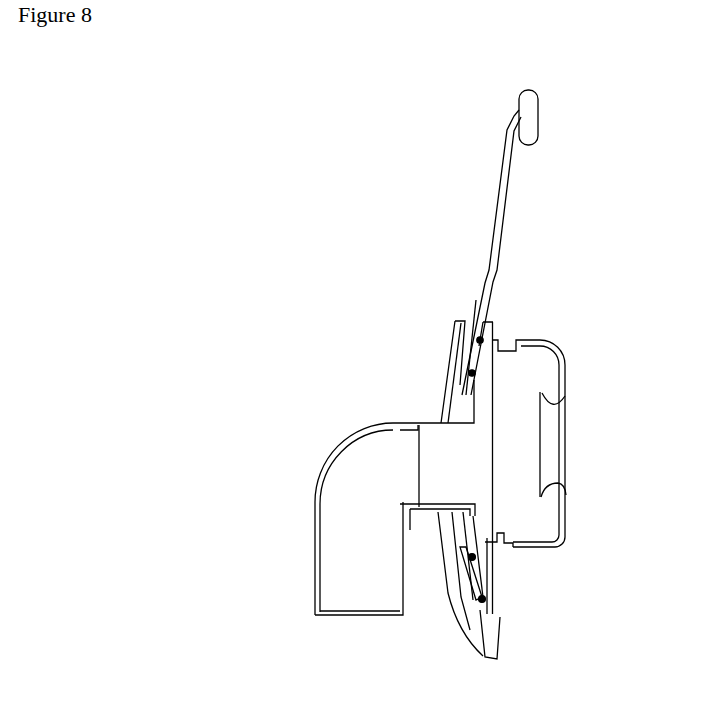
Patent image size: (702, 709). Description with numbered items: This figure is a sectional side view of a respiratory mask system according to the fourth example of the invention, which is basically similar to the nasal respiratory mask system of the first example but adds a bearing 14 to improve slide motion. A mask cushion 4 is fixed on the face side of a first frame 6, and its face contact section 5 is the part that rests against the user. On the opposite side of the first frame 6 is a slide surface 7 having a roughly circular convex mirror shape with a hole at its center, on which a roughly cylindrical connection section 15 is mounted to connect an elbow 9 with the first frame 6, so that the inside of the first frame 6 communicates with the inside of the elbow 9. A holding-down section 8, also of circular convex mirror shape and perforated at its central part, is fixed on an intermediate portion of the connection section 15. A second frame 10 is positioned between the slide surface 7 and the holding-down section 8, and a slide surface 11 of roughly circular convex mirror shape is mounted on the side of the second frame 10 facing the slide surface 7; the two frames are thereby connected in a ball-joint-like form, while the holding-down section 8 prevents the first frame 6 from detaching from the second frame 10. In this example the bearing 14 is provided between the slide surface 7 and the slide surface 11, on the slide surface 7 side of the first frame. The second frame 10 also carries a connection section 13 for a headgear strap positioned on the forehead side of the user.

The mask cushion 4 is at (557, 366).
The face contact section of mask cushion 5 is at (568, 498).
The first frame 6 is at (488, 562).
The slide surface of first frame 7 is at (473, 402).
The holding-down section of first frame 8 is at (452, 367).
The elbow 9 is at (338, 469).
The second frame 10 is at (487, 288).
The slide surface of second frame 11 is at (483, 624).
The connection section of headgear strap in second frame 13 is at (538, 125).
The bearing 14 is at (480, 340).
The connection section with elbow 15 is at (430, 428).